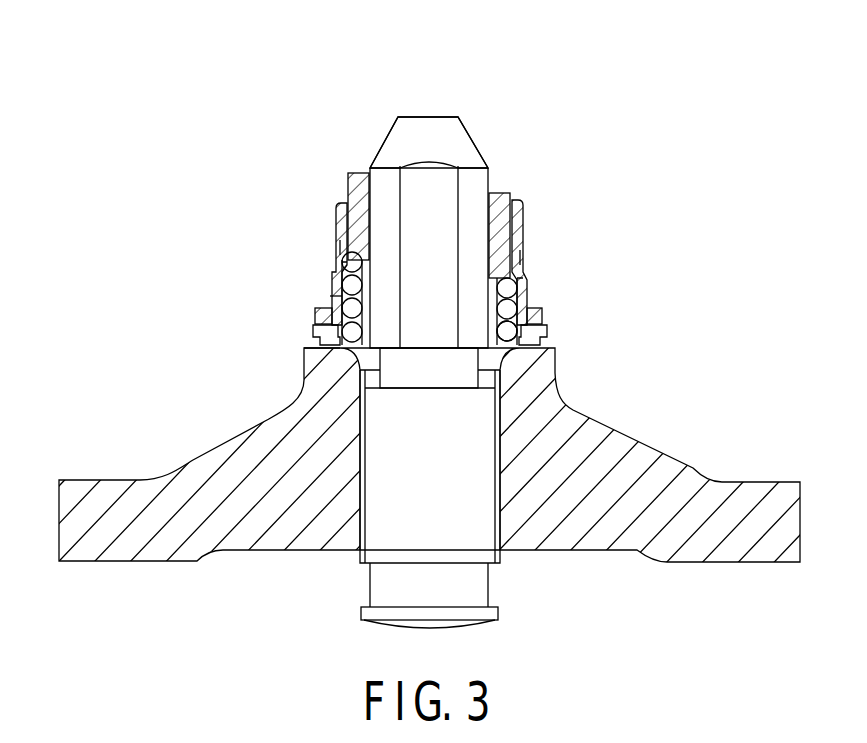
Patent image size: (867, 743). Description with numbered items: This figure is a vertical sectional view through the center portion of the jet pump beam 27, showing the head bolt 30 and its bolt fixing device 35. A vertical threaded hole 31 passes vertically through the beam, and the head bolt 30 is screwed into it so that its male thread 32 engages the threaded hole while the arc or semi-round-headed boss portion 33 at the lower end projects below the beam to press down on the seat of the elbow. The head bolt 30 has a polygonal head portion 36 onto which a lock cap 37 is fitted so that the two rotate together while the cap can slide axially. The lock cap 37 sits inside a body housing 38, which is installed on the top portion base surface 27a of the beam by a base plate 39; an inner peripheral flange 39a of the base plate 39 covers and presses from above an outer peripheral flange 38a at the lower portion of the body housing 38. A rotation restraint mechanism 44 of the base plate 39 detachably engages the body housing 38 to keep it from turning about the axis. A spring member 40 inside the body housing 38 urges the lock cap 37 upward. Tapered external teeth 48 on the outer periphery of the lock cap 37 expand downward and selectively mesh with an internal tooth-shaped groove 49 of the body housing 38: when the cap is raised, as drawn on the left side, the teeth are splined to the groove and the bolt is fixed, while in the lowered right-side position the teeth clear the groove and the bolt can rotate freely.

The jet pump beam 27 is at (733, 482).
The top portion base surface 27a is at (300, 345).
The head bolt 30 is at (429, 105).
The vertical threaded hole 31 is at (366, 498).
The male thread 32 is at (497, 530).
The semi-round-headed boss portion 33 is at (477, 624).
The bolt fixing device 35 is at (505, 168).
The polygonal head portion 36 is at (474, 138).
The lock cap 37 is at (348, 186).
The body housing 38 is at (340, 212).
The outer peripheral flange 38a is at (318, 318).
The base plate 39 is at (547, 332).
The inner peripheral flange 39a is at (332, 299).
The spring member 40 is at (512, 288).
The rotation restraint mechanism 44 is at (311, 331).
The tapered external teeth 48 is at (343, 262).
The internal tooth-shaped groove 49 is at (338, 247).